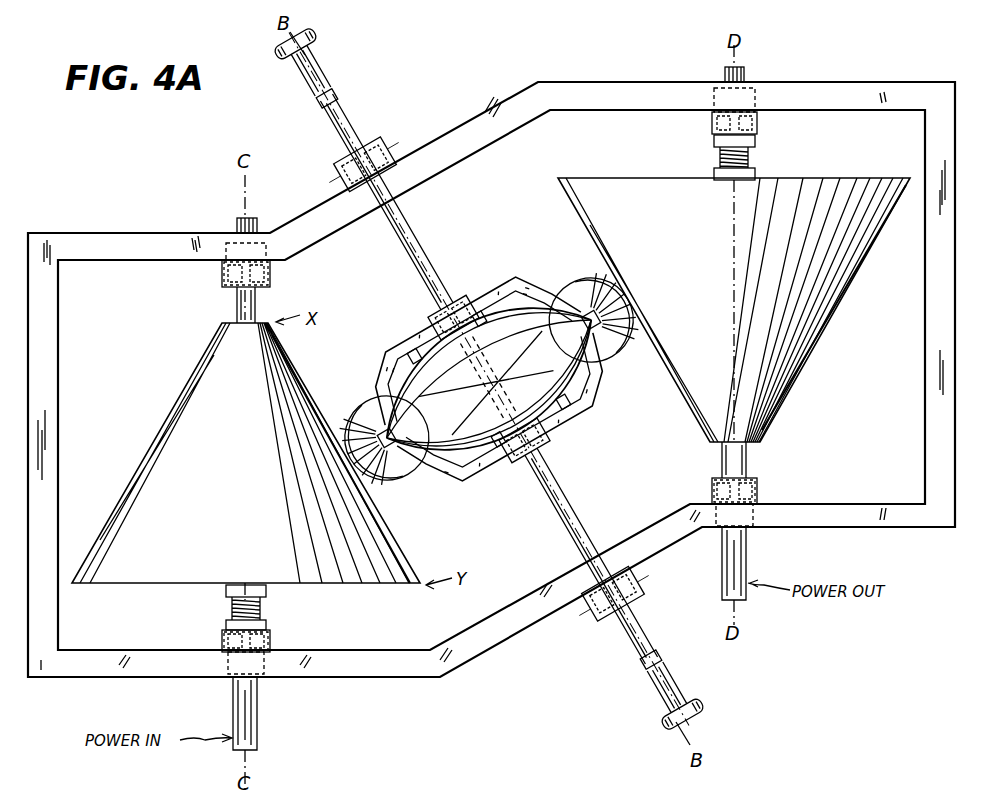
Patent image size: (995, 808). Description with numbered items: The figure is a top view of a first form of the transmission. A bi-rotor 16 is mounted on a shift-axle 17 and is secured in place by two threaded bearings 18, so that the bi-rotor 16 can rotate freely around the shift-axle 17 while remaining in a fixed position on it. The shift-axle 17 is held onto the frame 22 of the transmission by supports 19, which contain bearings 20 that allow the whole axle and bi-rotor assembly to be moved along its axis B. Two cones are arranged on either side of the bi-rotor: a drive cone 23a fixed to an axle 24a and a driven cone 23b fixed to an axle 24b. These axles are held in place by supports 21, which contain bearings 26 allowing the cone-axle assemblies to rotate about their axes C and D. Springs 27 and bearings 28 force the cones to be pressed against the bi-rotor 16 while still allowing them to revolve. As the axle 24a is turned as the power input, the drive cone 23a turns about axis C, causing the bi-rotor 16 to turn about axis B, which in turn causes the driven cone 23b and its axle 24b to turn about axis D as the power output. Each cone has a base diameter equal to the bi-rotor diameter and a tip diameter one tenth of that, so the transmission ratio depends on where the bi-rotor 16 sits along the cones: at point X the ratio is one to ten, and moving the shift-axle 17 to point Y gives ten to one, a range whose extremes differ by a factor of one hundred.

The bi-rotor 16 is at (600, 366).
The shift-axle 17 is at (572, 495).
The threaded bearings 18 is at (451, 309).
The supports 19 is at (340, 182).
The bearings 20 is at (378, 148).
The supports 21 is at (272, 278).
The frame 22 is at (55, 373).
The drive cone 23a is at (154, 448).
The driven cone 23b is at (827, 322).
The axle 24a is at (258, 708).
The axle 24b is at (748, 550).
The bearings 26 is at (226, 272).
The springs 27 is at (262, 608).
The bearings 28 is at (226, 624).